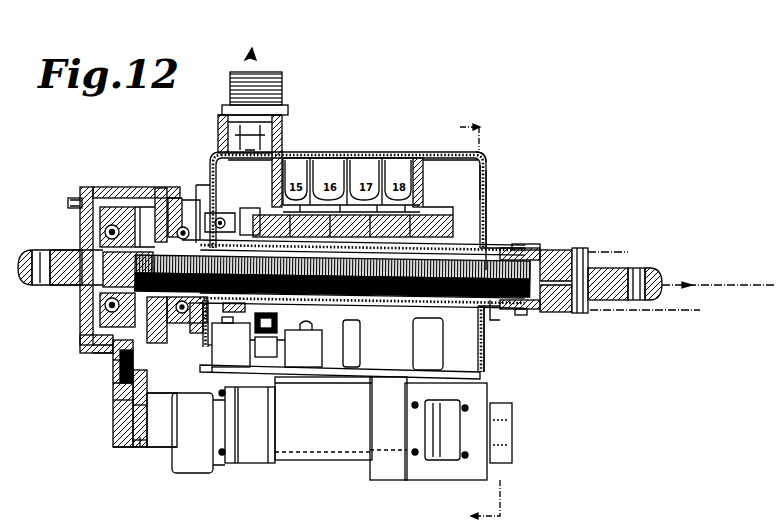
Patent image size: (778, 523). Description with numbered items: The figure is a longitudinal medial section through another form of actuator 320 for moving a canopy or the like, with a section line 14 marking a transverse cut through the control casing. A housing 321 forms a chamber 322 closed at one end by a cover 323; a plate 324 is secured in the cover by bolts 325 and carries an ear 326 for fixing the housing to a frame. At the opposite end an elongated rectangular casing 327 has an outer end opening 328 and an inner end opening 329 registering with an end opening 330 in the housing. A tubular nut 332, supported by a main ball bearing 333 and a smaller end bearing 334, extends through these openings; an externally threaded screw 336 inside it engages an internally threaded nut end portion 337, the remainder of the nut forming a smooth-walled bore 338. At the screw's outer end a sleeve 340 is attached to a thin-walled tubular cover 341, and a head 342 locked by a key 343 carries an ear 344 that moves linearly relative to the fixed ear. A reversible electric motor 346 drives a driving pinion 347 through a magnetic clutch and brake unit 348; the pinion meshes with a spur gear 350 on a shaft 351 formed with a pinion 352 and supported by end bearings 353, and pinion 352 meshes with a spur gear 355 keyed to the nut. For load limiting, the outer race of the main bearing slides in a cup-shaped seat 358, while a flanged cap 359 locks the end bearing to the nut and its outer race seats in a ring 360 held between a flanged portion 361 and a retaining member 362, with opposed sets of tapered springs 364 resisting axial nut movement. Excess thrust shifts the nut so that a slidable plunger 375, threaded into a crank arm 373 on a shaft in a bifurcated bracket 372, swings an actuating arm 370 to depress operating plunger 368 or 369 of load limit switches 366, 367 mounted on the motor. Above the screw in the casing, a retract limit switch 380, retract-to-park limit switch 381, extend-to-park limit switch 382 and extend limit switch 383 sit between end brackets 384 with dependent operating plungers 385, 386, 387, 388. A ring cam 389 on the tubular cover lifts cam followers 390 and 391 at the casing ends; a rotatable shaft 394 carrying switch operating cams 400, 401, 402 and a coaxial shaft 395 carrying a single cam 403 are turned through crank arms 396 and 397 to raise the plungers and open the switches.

The section line 14- 14 is at (473, 321).
The actuator 320 is at (251, 58).
The housing 321 is at (143, 190).
The chamber 322 is at (132, 187).
The cover 323 is at (125, 187).
The plate 324 is at (80, 228).
The bolts 325 is at (68, 203).
The ear 326 is at (28, 250).
The casing 327 is at (488, 203).
The outer end opening 328 is at (498, 227).
The inner end opening 329 is at (211, 185).
The end opening 330 is at (195, 195).
The tubular nut 332 is at (444, 318).
The main ball bearing 333 is at (186, 205).
The end bearing 334 is at (82, 188).
The screw 336 is at (523, 253).
The nut end portion 337 is at (522, 315).
The bore 338 is at (437, 318).
The sleeve 340 is at (572, 315).
The tubular cover 341 is at (500, 330).
The head 342 is at (572, 250).
The key 343 is at (590, 254).
The ear 344 is at (627, 267).
The reversible electric motor 346 is at (317, 457).
The driving pinion 347 is at (145, 437).
The magnetic clutch and brake unit 348 is at (210, 467).
The spur gear 350 is at (148, 447).
The shaft 351 is at (118, 397).
The pinion 352 is at (123, 405).
The end bearings 353 is at (112, 382).
The spur gear 355 is at (158, 190).
The cup-shaped seat 358 is at (170, 190).
The flanged cap 359 is at (100, 285).
The ring 360 is at (97, 340).
The flanged portion 361 is at (85, 340).
The retaining member 362 is at (112, 368).
The springs 364 is at (80, 317).
The load limit switch 366 is at (240, 355).
The load limit switch 367 is at (311, 355).
The operating plunger 368 is at (256, 345).
The operating plunger 369 is at (355, 325).
The actuating arm 370 is at (318, 344).
The bifurcated bracket 372 is at (340, 317).
The crank arm 373 is at (300, 313).
The slidable plunger 375 is at (233, 340).
The retract limit switch 380 is at (287, 165).
The retract-to-park limit switch 381 is at (312, 207).
The extend-to-park limit switch 382 is at (392, 158).
The extend limit switch 383 is at (425, 155).
The end brackets 384 is at (285, 62).
The operating plunger 385 is at (293, 205).
The operating plunger 386 is at (335, 200).
The operating plunger 387 is at (375, 200).
The operating plunger 388 is at (415, 190).
The ring cam 389 is at (242, 178).
The cam follower 390 is at (221, 216).
The cam follower 391 is at (487, 203).
The rotatable shaft 394 is at (265, 203).
The coaxial shaft 395 is at (488, 178).
The crank arm 396 is at (480, 155).
The crank arm 397 is at (248, 170).
The switch operating cam 400 is at (312, 190).
The switch operating cam 401 is at (342, 210).
The switch operating cam 402 is at (383, 212).
The switch operating cam 403 is at (400, 215).